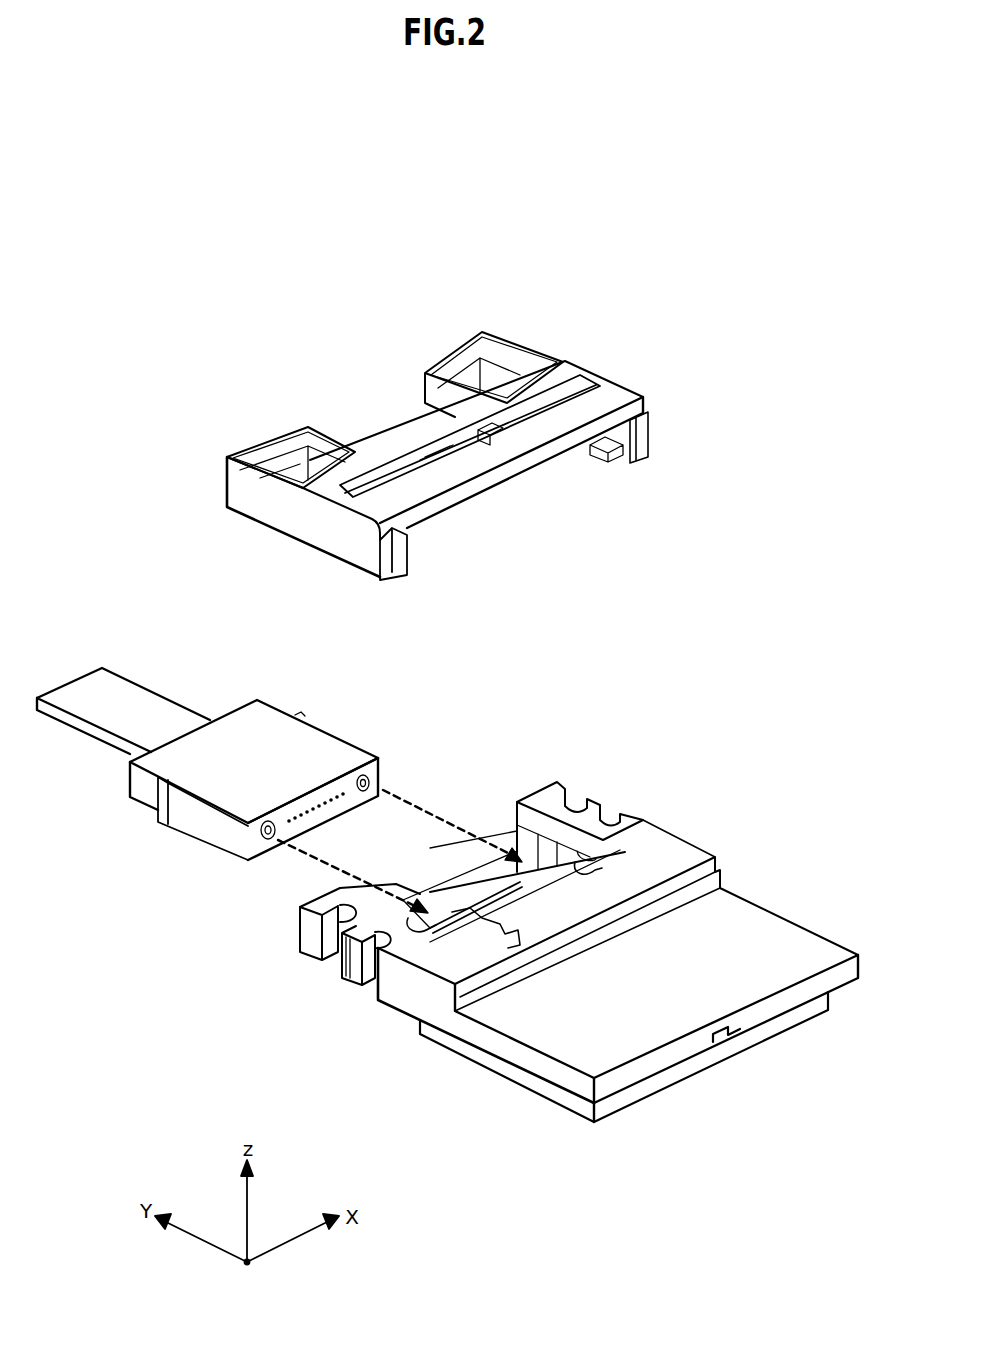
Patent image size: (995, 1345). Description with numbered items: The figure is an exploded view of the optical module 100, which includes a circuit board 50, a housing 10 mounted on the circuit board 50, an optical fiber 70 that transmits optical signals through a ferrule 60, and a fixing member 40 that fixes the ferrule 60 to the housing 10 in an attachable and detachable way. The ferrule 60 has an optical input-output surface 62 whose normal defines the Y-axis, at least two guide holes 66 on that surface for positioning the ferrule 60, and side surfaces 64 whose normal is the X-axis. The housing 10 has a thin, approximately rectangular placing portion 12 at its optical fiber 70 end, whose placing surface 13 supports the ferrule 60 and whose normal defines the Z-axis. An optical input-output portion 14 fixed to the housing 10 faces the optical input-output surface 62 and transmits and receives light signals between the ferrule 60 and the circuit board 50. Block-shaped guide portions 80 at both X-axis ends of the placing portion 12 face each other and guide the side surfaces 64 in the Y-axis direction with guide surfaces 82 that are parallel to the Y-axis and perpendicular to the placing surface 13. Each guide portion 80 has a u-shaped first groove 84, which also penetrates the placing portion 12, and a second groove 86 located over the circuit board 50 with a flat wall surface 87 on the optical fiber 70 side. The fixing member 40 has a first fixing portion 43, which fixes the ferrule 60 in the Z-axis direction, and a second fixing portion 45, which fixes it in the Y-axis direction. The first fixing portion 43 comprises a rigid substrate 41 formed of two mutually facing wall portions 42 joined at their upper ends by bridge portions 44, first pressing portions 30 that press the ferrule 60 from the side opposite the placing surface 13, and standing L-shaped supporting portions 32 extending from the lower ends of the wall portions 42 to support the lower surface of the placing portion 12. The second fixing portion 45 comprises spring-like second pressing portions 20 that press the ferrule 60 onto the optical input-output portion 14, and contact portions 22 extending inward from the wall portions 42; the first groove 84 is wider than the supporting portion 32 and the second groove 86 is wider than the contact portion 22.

The housing 10 is at (545, 934).
The placing portion 12 is at (432, 897).
The placing surface 13 is at (513, 917).
The optical input-output portion 14 is at (480, 877).
The second pressing portion 20 is at (290, 453).
The contact portion 22 is at (400, 541).
The first pressing portion 30 is at (528, 413).
The supporting portion 32 is at (570, 463).
The fixing member 40 is at (470, 409).
The substrate 41 is at (348, 546).
The wall portion 42 is at (307, 523).
The first fixing portion 43 is at (480, 280).
The bridge portion 44 is at (428, 437).
The second fixing portion 45 is at (248, 330).
The circuit board 50 is at (780, 1025).
The ferrule 60 is at (326, 784).
The optical input-output surface 62 is at (318, 796).
The side surface 64 is at (192, 812).
The guide hole 66 is at (388, 784).
The optical fiber 70 is at (130, 690).
The guide portion 80 is at (317, 903).
The guide surface 82 is at (556, 809).
The first groove 84 is at (580, 802).
The second groove 86 is at (622, 825).
The wall surface 87 is at (367, 967).
The optical module 100 is at (519, 1241).